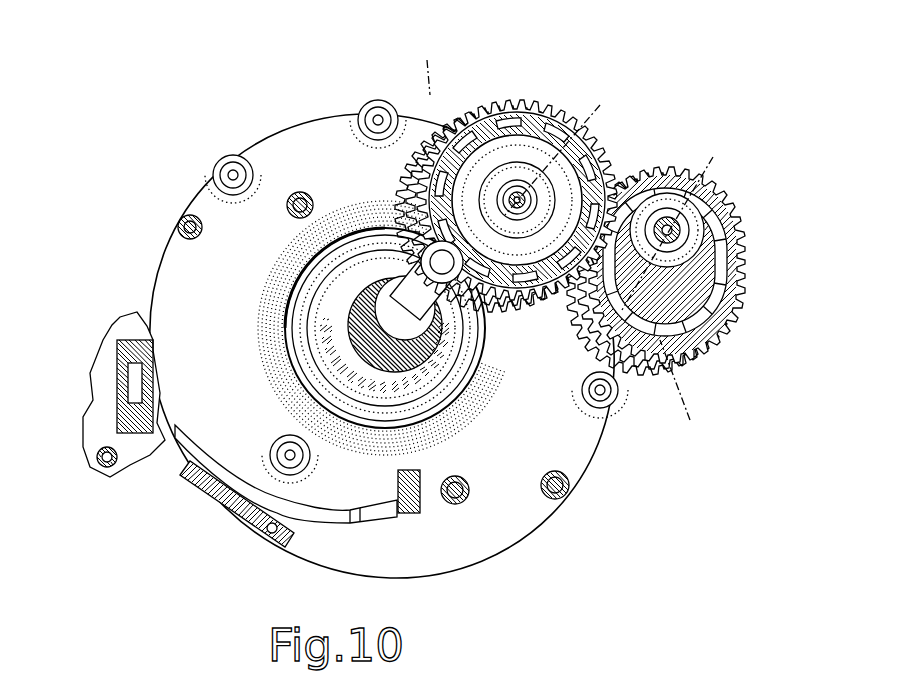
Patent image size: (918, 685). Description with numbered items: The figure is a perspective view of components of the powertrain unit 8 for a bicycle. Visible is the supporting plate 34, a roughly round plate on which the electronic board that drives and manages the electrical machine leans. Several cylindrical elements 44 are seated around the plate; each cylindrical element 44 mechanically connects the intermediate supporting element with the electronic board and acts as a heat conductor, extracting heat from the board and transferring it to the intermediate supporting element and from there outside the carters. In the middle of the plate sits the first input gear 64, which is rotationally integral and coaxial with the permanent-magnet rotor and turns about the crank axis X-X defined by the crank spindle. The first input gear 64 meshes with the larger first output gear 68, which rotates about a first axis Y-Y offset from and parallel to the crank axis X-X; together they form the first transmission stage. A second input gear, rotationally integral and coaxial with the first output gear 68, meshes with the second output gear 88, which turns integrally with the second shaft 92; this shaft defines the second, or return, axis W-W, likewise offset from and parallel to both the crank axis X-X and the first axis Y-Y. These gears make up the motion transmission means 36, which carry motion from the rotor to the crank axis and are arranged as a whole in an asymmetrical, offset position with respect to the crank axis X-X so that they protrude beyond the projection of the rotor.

The powertrain unit 8 is at (436, 340).
The supporting plate 34 is at (503, 487).
The motion transmission means 36 is at (715, 234).
The cylindrical element 44 is at (213, 175).
The first input gear 64 is at (342, 326).
The first output gear 68 is at (512, 95).
The second output gear 88 is at (735, 228).
The second shaft 92 is at (743, 310).
The crank axis X is at (425, 62).
The first axis Y is at (603, 100).
The return axis W is at (690, 420).